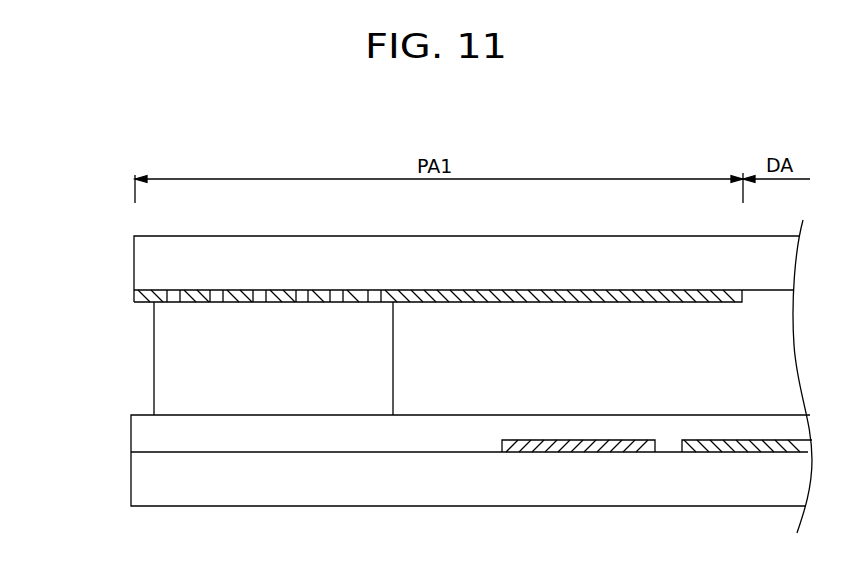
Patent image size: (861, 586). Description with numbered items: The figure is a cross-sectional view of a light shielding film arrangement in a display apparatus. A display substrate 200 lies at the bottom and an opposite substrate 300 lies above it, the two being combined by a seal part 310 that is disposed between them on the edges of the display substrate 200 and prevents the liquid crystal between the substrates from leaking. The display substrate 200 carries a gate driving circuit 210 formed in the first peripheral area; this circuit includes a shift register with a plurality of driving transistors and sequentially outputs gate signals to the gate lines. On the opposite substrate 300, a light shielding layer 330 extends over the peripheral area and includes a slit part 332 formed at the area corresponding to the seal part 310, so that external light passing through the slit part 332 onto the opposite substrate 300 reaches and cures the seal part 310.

The opposite substrate 300 is at (130, 263).
The light shielding layer 330 is at (519, 290).
The slit part 332 is at (334, 296).
The seal part 310 is at (163, 356).
The display substrate 200 is at (124, 475).
The gate driving circuit 210 is at (561, 447).